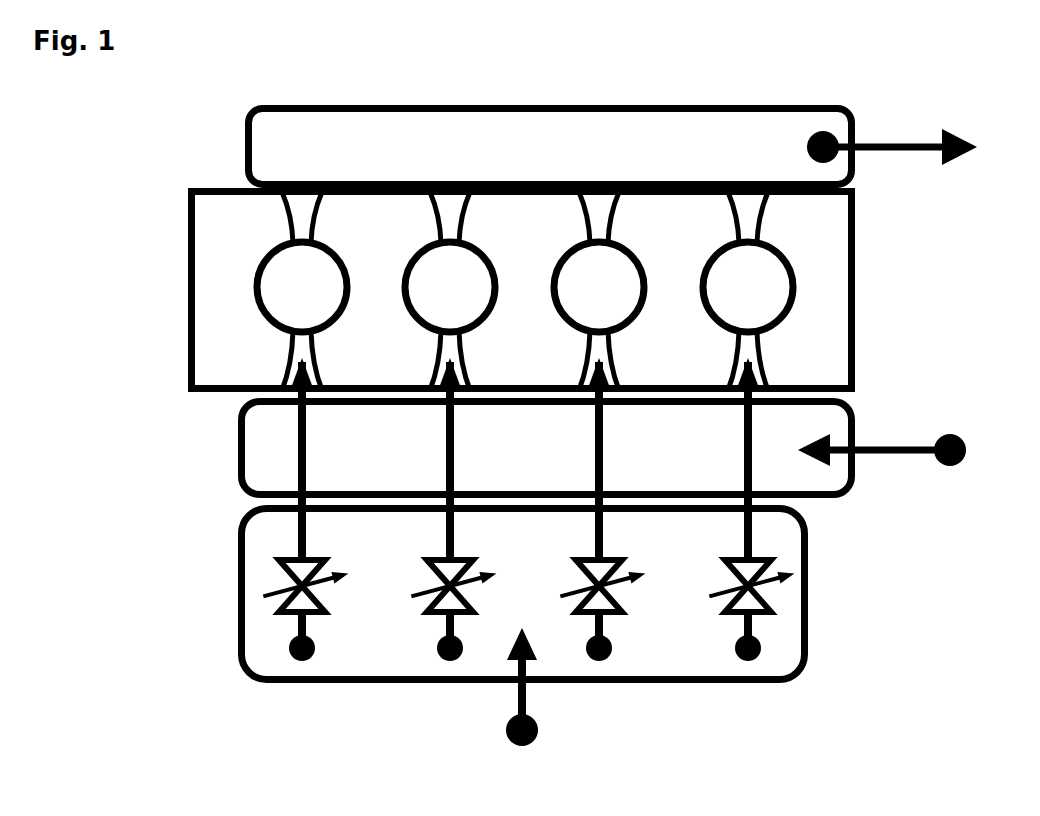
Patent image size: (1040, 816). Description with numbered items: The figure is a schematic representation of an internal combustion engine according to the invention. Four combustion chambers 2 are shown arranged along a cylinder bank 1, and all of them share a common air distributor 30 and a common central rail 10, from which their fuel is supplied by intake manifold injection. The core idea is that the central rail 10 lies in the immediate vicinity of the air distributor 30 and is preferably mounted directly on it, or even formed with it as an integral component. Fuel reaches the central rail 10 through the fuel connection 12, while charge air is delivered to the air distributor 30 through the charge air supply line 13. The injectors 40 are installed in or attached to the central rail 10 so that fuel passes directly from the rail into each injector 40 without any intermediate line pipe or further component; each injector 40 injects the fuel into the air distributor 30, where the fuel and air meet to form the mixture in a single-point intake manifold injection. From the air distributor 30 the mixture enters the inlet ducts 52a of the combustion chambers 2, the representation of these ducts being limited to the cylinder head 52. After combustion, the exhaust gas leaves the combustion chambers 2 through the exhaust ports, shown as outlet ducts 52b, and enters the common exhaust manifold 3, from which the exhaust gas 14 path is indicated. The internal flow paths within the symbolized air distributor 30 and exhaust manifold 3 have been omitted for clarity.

The cylinder bank 1 is at (176, 326).
The combustion chamber 2 is at (236, 265).
The exhaust manifold 3 is at (228, 135).
The central rail 10 is at (216, 577).
The fuel connection 12 is at (522, 708).
The charge air supply line 13 is at (898, 450).
The exhaust gas 14 is at (908, 147).
The air distributor 30 is at (222, 450).
The injector 40 is at (301, 682).
The cylinder head 52 is at (541, 291).
The inlet duct 52a is at (778, 358).
The outlet duct 52b is at (778, 211).